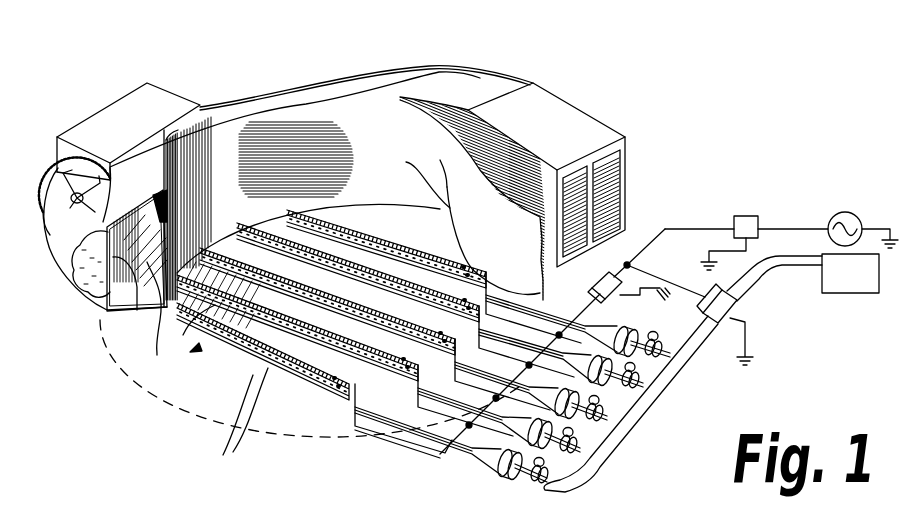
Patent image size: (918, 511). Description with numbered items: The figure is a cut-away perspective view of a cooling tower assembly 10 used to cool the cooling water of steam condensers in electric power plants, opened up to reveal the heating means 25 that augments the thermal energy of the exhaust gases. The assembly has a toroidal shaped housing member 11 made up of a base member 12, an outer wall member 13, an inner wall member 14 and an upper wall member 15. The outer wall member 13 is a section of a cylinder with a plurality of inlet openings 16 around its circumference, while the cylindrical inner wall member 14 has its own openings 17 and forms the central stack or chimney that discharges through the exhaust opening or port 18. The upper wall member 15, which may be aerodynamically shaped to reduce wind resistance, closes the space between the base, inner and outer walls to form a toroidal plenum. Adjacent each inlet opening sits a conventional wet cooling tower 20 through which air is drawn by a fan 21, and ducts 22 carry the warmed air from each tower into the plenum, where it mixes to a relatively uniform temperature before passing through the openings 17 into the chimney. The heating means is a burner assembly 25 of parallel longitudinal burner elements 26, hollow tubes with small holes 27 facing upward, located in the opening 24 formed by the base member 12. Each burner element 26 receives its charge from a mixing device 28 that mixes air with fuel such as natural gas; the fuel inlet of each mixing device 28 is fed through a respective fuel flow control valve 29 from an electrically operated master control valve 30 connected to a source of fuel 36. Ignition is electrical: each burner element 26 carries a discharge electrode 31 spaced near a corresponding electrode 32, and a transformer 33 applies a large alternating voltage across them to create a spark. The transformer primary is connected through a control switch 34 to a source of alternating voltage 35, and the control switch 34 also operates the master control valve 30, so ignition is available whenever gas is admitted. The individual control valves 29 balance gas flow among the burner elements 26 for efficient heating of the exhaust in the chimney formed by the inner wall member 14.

The cooling tower assembly 10 is at (378, 54).
The toroidal shaped housing member 11 is at (302, 104).
The base member 12 is at (110, 322).
The outer wall member 13 is at (100, 312).
The inner wall member 14 is at (183, 335).
The upper wall member 15 is at (150, 150).
The inlet openings 16 is at (133, 310).
The openings 17 is at (345, 157).
The exhaust opening or port 18 is at (253, 100).
The wet cooling tower 20 is at (167, 98).
The fan 21 is at (58, 170).
The ducts 22 is at (470, 70).
The opening 24 is at (214, 356).
The heating means (combustor or burner assembly) 25 is at (200, 342).
The longitudinal burner elements 26 is at (346, 284).
The small holes 27 is at (234, 419).
The mixing device 28 is at (578, 365).
The fuel flow control valve 29 is at (580, 465).
The master control valve 30 is at (738, 306).
The discharge electrode 31 is at (349, 373).
The electrode 32 is at (340, 385).
The transformer 33 is at (602, 262).
The control switch 34 is at (746, 216).
The source of alternating voltage 35 is at (849, 212).
The source of fuel 36 is at (823, 293).